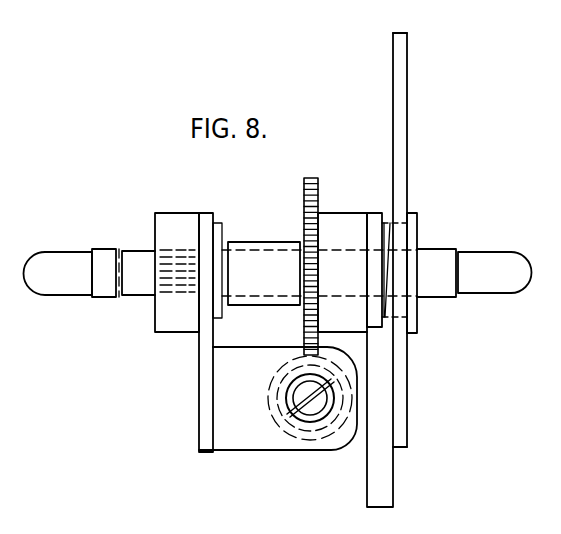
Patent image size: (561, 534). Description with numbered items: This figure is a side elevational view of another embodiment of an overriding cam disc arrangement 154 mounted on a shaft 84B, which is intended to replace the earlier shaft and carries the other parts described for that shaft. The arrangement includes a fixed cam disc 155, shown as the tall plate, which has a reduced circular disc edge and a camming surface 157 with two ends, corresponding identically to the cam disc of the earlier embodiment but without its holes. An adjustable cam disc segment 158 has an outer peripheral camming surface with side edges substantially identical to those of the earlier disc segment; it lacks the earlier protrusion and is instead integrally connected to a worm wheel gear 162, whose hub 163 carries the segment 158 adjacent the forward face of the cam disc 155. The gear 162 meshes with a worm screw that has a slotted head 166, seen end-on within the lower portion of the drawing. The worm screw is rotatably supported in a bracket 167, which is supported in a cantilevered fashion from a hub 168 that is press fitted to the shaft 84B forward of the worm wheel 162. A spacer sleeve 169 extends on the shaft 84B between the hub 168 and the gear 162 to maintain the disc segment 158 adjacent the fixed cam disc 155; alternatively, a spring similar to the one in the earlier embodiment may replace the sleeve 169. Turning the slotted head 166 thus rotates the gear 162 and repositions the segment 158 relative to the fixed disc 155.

The shaft 84B is at (107, 278).
The overriding cam disc arrangement 154 is at (294, 460).
The fixed cam disc 155 is at (407, 115).
The camming surface 157 is at (403, 33).
The adjustable cam disc segment 158 is at (387, 485).
The worm wheel gear 162 is at (312, 178).
The hub 163 is at (343, 218).
The slotted head 166 is at (295, 393).
The bracket 167 is at (267, 347).
The hub 168 is at (182, 317).
The spacer sleeve 169 is at (263, 242).